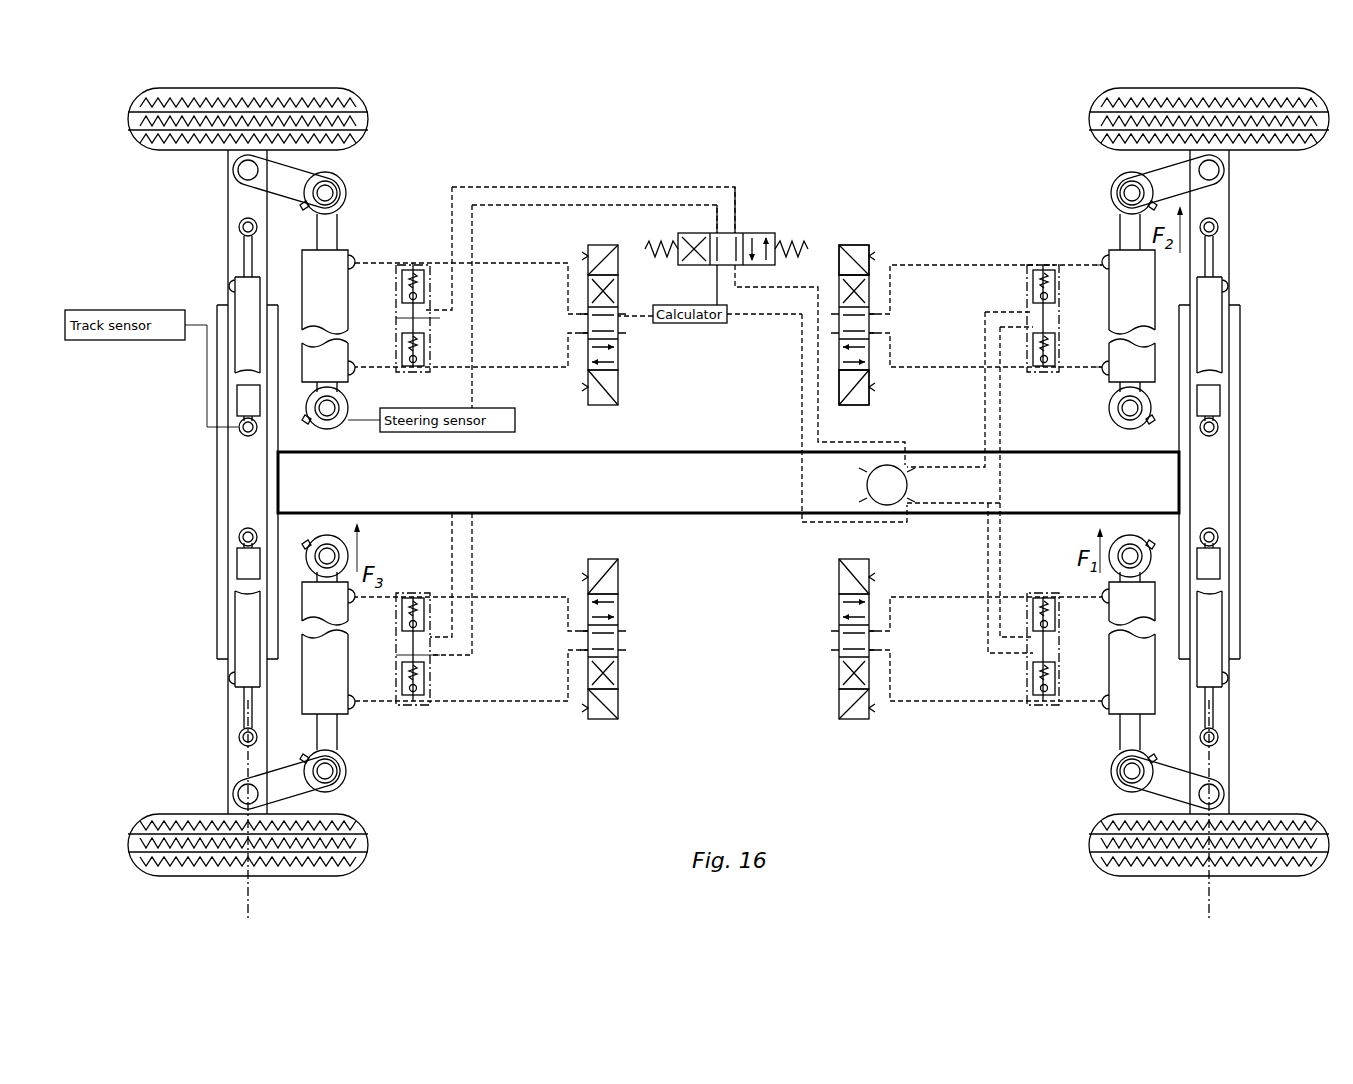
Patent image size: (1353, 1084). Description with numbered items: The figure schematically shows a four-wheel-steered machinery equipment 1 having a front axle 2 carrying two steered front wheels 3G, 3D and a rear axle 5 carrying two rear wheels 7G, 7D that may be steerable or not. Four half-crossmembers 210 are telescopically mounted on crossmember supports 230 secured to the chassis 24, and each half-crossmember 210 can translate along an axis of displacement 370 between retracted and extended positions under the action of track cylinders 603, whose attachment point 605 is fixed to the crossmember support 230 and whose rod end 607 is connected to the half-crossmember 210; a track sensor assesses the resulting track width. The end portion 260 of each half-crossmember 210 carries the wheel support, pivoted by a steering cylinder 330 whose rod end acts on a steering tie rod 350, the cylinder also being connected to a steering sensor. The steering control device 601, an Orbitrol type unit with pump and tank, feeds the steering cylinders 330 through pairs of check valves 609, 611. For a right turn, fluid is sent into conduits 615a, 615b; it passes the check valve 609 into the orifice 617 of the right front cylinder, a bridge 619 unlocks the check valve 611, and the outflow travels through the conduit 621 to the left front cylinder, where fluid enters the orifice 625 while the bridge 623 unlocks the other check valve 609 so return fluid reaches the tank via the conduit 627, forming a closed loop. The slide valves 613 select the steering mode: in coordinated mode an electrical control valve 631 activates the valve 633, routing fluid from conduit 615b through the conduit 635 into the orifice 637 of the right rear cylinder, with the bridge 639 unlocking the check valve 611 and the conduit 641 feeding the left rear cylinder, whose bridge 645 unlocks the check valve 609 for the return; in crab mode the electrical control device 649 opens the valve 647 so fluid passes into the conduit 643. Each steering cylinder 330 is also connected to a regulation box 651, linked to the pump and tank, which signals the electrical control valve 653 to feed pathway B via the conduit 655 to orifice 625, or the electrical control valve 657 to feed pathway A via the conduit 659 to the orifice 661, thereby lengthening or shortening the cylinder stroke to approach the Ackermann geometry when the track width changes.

The machinery equipment 1 is at (780, 182).
The front axle 2 is at (1266, 458).
The rear axle 5 is at (190, 457).
The left front wheel 3G is at (1098, 92).
The right front wheel 3D is at (1098, 848).
The left rear wheel 7G is at (360, 92).
The right rear wheel 7D is at (355, 848).
The chassis 24 is at (764, 444).
The half-crossmember 210 is at (228, 192).
The crossmember support 230 is at (217, 588).
The end portion 260 is at (240, 156).
The steering cylinder 330 is at (358, 238).
The steering tie rod 350 is at (300, 180).
The axis of displacement 370 is at (250, 895).
The steering control device 601 is at (911, 437).
The track cylinder 603 is at (241, 515).
The attachment point 605 is at (238, 428).
The rod end 607 is at (238, 227).
The check valve 609 is at (426, 279).
The check valve 611 is at (426, 352).
The slide valve 613 is at (751, 209).
The conduit 615a is at (953, 505).
The conduit 615b is at (823, 523).
The orifice 617 is at (1100, 705).
The bridge 619 is at (1050, 640).
The conduit 621 is at (1002, 442).
The bridge 623 is at (1050, 316).
The orifice 625 is at (1050, 372).
The conduit 627 is at (985, 445).
The electrical control valve 631 is at (814, 262).
The valve 633 is at (748, 238).
The conduit 635 is at (496, 206).
The orifice 637 is at (413, 704).
The bridge 639 is at (430, 652).
The conduit 641 is at (453, 540).
The conduit 643 is at (476, 186).
The bridge 645 is at (420, 318).
The valve 647 is at (700, 263).
The electrical control device 649 is at (662, 238).
The regulation box 651 is at (639, 322).
The electrical control valve 653 is at (850, 246).
The conduit 655 is at (900, 366).
The electrical control valve 657 is at (865, 376).
The conduit 659 is at (956, 268).
The orifice 661 is at (1102, 262).